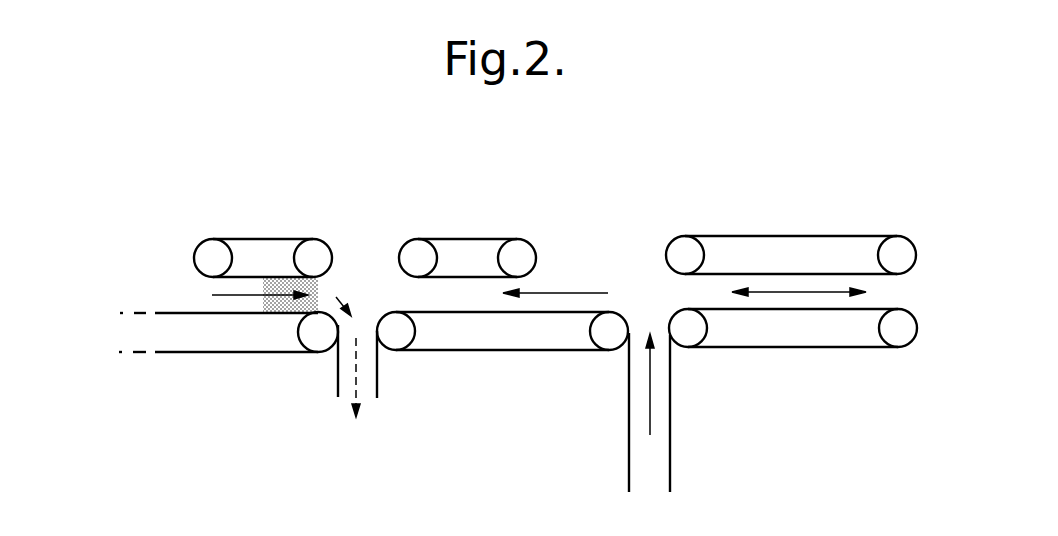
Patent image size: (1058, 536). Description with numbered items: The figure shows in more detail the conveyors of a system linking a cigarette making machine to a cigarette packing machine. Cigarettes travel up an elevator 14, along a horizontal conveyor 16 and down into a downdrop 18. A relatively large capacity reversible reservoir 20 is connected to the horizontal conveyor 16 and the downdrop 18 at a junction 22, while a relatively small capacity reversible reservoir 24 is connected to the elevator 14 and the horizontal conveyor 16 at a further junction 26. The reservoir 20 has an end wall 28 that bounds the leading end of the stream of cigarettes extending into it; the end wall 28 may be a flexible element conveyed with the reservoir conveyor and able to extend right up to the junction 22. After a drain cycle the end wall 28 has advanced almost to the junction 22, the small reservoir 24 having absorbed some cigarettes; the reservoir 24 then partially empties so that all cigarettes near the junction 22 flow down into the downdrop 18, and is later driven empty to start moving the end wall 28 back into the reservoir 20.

The elevator 14 is at (670, 408).
The horizontal conveyor 16 is at (550, 352).
The downdrop 18 is at (377, 380).
The reversible reservoir 20 is at (150, 282).
The junction 22 is at (346, 238).
The reversible reservoir 24 is at (868, 225).
The junction 26 is at (632, 251).
The end wall 28 is at (282, 310).